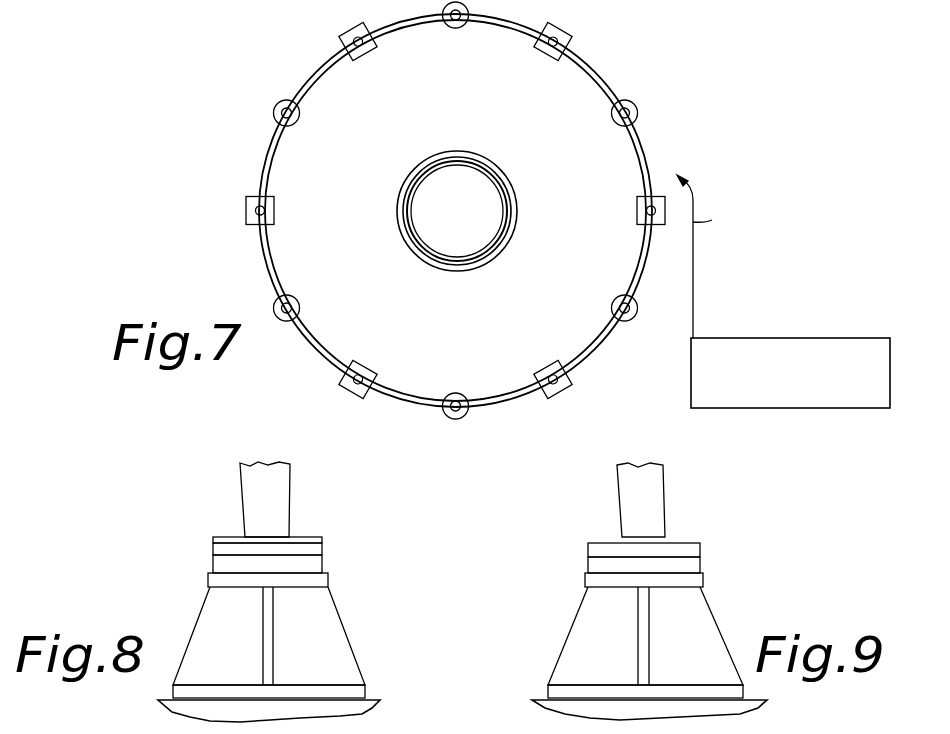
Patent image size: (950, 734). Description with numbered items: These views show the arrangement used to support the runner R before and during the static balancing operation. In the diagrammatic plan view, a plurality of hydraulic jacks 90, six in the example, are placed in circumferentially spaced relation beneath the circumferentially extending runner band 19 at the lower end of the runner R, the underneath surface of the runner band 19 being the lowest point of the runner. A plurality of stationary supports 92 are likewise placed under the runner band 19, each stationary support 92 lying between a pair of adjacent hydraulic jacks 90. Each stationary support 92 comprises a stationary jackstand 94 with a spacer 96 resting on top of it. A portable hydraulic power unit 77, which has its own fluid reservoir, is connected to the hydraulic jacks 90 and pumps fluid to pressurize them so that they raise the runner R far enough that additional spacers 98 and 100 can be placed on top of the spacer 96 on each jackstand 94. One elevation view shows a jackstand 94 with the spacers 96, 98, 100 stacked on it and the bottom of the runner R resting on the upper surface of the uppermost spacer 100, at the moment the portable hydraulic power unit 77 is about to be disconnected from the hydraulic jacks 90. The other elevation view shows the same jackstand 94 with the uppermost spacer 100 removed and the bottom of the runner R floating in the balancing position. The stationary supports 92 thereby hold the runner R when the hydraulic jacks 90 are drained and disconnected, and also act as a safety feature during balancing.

In FIG. 7, the runner band 19 is at (645, 148).
In FIG. 8, the runner band 19 is at (284, 522).
In FIG. 9, the runner band 19 is at (658, 518).
In FIG. 7, the runner R is at (599, 73).
In FIG. 8, the runner R is at (289, 476).
In FIG. 9, the runner R is at (662, 477).
In FIG. 7, the hydraulic jack 90 is at (456, 28).
In FIG. 7, the stationary support 92 is at (365, 55).
In FIG. 8, the stationary support 92 is at (344, 634).
In FIG. 9, the stationary support 92 is at (711, 616).
In FIG. 8, the stationary jackstand 94 is at (343, 661).
In FIG. 9, the stationary jackstand 94 is at (575, 641).
In FIG. 8, the spacer 96 is at (316, 564).
In FIG. 9, the spacer 96 is at (693, 565).
In FIG. 8, the additional spacer 98 is at (316, 549).
In FIG. 9, the additional spacer 98 is at (697, 550).
In FIG. 8, the uppermost spacer 100 is at (322, 540).
In FIG. 7, the portable hydraulic power unit 77 is at (828, 338).